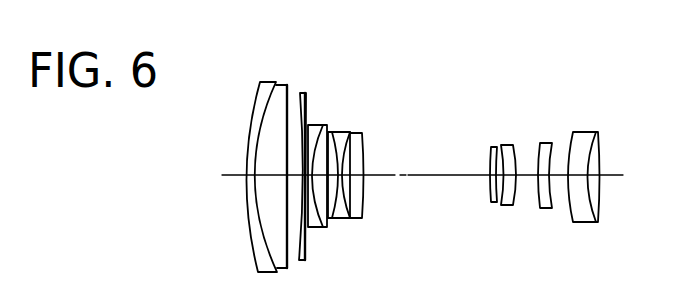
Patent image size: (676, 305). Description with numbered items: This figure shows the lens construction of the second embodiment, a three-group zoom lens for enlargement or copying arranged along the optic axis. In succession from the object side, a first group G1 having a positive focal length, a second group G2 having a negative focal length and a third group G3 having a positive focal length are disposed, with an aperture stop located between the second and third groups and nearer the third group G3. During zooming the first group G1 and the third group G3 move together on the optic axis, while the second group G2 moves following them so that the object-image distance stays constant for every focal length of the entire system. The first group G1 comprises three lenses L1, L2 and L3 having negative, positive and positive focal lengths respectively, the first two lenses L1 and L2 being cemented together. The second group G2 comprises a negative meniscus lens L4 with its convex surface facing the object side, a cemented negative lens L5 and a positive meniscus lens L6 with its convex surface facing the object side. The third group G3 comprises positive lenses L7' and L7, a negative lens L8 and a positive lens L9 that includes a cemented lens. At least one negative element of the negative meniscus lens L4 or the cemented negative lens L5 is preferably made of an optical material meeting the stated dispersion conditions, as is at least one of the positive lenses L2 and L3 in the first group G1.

The first group G1 is at (320, 33).
The second group G2 is at (417, 68).
The third group G3 is at (593, 70).
The lens L1 is at (262, 81).
The lens L2 is at (282, 84).
The lens L3 is at (300, 92).
The negative meniscus lens L4 is at (322, 124).
The cemented negative lens L5 is at (340, 131).
The positive meniscus lens L6 is at (360, 132).
The positive lens L7' is at (475, 138).
The positive lens L7 is at (508, 139).
The negative lens L8 is at (545, 142).
The positive lens L9 is at (600, 130).